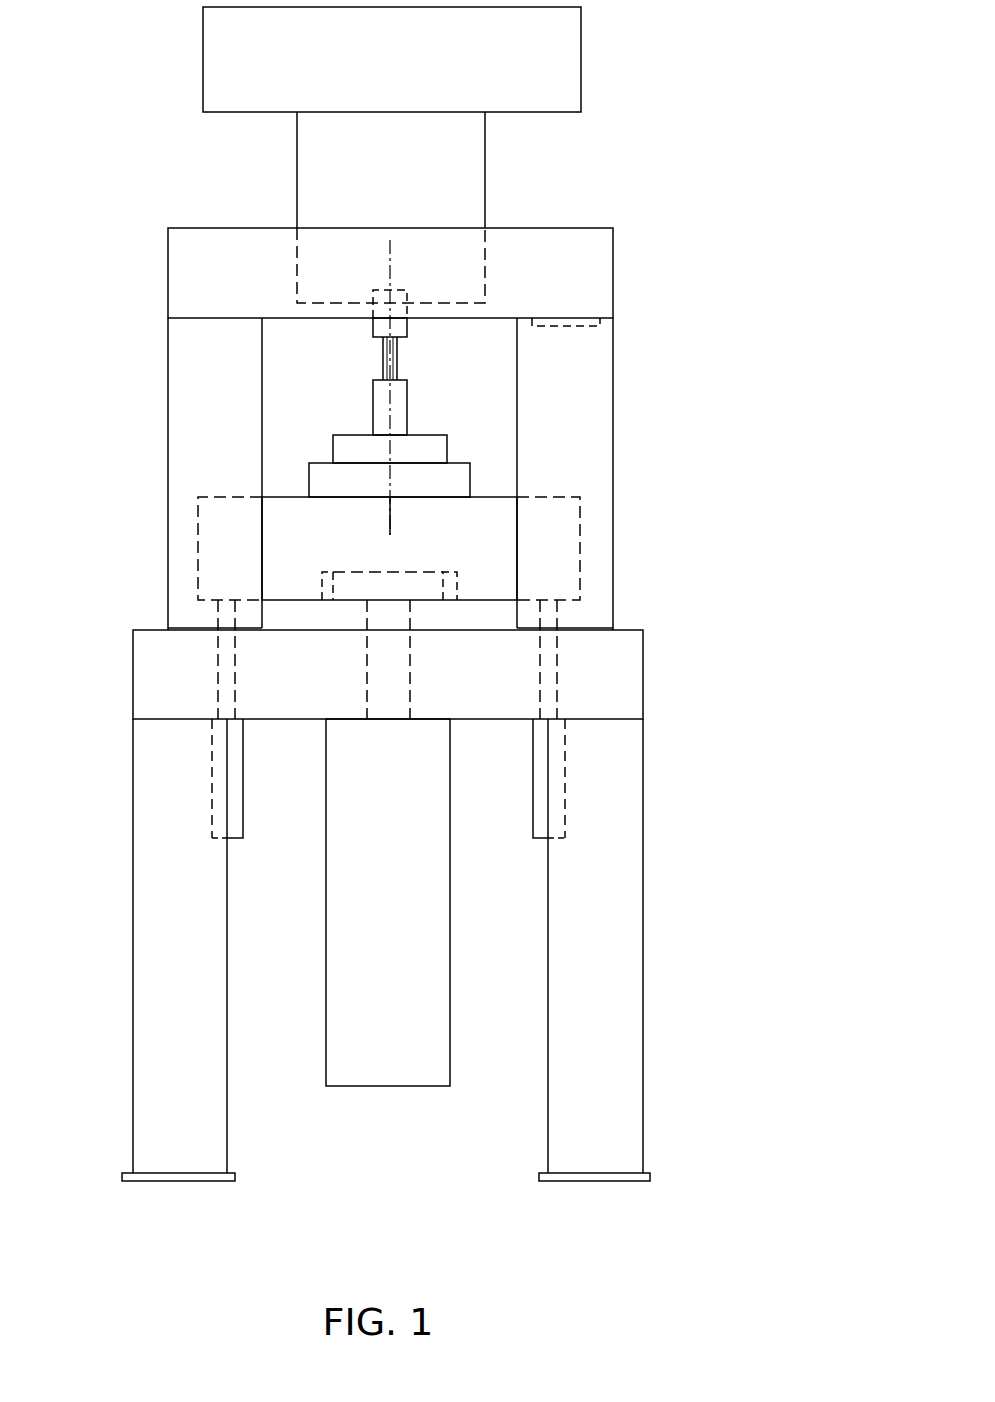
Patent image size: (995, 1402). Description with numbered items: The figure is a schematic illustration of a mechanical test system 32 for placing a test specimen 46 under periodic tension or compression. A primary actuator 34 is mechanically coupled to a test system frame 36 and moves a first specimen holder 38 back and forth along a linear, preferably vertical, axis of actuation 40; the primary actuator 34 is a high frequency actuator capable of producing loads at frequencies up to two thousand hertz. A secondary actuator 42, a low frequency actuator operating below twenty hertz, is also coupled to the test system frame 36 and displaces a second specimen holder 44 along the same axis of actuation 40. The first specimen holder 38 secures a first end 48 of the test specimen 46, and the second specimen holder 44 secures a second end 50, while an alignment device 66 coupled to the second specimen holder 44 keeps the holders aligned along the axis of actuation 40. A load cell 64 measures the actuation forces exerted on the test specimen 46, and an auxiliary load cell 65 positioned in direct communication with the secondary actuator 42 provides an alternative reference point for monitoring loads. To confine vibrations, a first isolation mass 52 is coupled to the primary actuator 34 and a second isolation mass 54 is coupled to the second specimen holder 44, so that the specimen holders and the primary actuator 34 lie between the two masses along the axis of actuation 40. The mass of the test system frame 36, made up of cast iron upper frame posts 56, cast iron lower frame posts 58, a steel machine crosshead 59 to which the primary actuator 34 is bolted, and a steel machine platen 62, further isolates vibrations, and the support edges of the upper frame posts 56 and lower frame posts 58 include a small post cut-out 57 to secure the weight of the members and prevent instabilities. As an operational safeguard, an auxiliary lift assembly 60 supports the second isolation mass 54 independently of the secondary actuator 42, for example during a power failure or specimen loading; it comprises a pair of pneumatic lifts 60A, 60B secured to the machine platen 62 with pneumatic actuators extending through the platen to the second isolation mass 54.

The mechanical test system 32 is at (777, 33).
The primary actuator 34 is at (375, 190).
The test system frame 36 is at (613, 228).
The first specimen holder 38 is at (407, 330).
The axis of actuation 40 is at (393, 514).
The secondary actuator 42 is at (380, 855).
The second specimen holder 44 is at (407, 405).
The test specimen 46 is at (397, 358).
The first end 48 is at (346, 329).
The second end 50 is at (346, 388).
The first isolation mass 52 is at (371, 78).
The second isolation mass 54 is at (280, 552).
The upper frame posts 56 is at (613, 352).
The post cut-out 57 is at (563, 330).
The lower frame posts 58 is at (133, 868).
The machine crosshead 59 is at (543, 290).
The auxiliary lift assembly 60 is at (387, 900).
The pneumatic lift 60A is at (243, 802).
The pneumatic lift 60B is at (533, 802).
The machine platen 62 is at (451, 688).
The load cell 64 is at (333, 440).
The auxiliary load cell 65 is at (365, 582).
The alignment device 66 is at (420, 495).